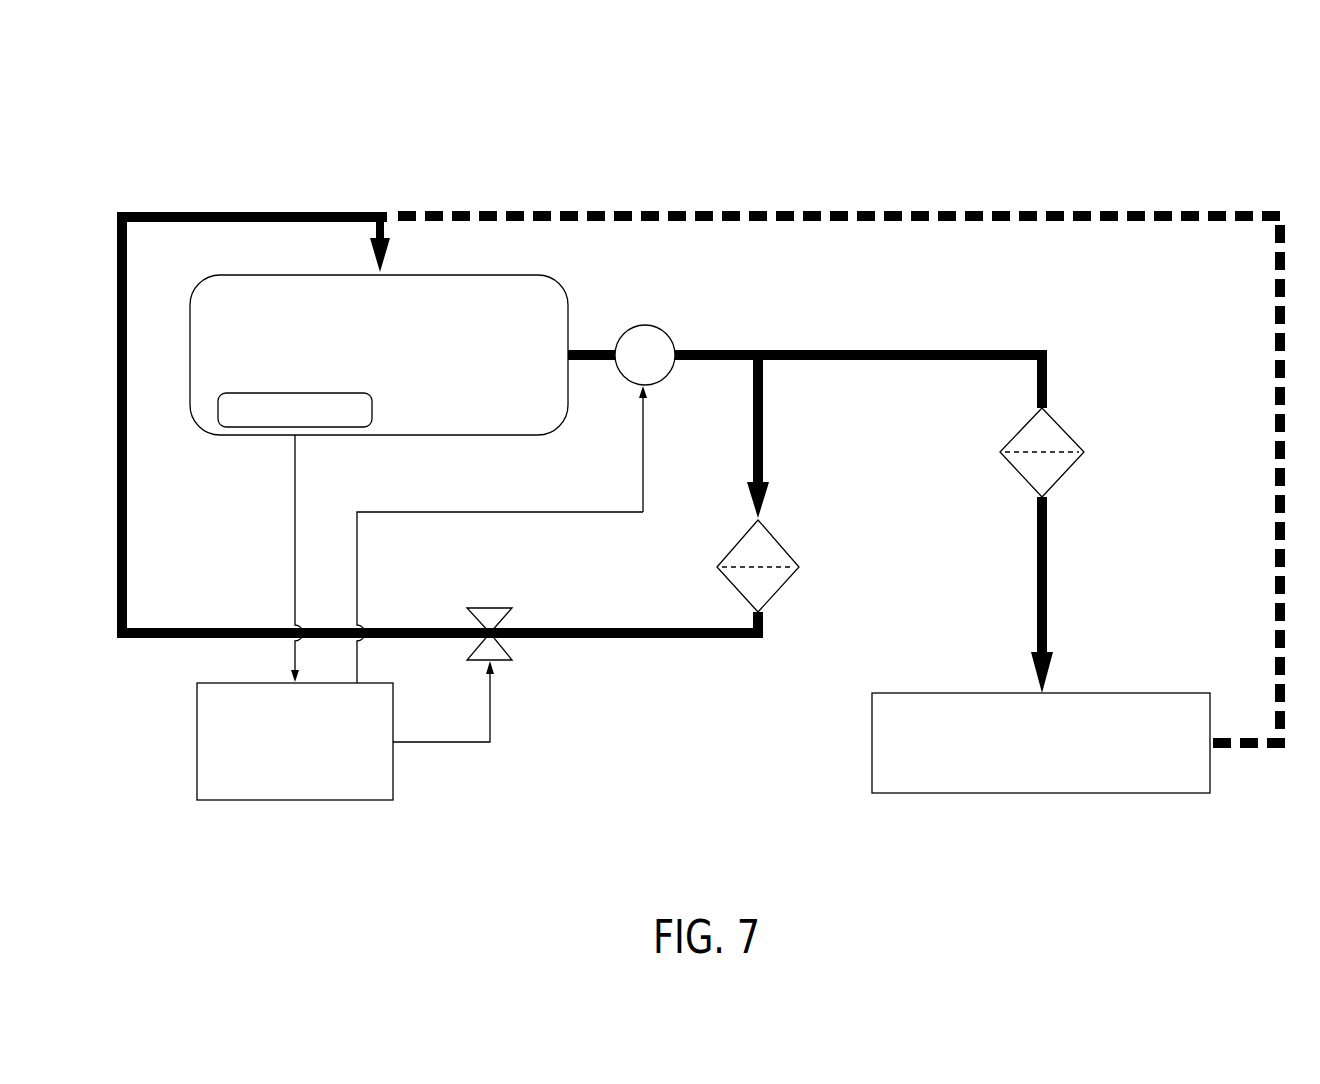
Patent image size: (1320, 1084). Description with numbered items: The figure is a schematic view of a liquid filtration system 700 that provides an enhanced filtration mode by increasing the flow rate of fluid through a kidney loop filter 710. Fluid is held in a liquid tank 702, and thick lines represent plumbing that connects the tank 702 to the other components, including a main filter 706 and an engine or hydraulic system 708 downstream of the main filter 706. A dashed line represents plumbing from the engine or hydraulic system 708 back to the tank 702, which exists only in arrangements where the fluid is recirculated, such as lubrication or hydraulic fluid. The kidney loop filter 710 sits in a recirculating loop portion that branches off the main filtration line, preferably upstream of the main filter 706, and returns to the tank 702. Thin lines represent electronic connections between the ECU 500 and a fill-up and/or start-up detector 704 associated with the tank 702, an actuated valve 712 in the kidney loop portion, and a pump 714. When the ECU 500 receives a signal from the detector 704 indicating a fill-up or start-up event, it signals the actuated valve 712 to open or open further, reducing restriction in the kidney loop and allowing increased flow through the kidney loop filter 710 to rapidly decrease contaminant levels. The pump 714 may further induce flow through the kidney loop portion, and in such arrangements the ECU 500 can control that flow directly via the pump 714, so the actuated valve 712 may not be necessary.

The filtration system 700 is at (352, 115).
The liquid tank 702 is at (245, 273).
The fill-up and/or start-up detector 704 is at (247, 436).
The main filter 706 is at (1063, 432).
The engine or hydraulic system 708 is at (938, 693).
The kidney loop filter 710 is at (782, 543).
The actuated valve 712 is at (488, 607).
The pump 714 is at (631, 322).
The ECU 500 is at (197, 755).